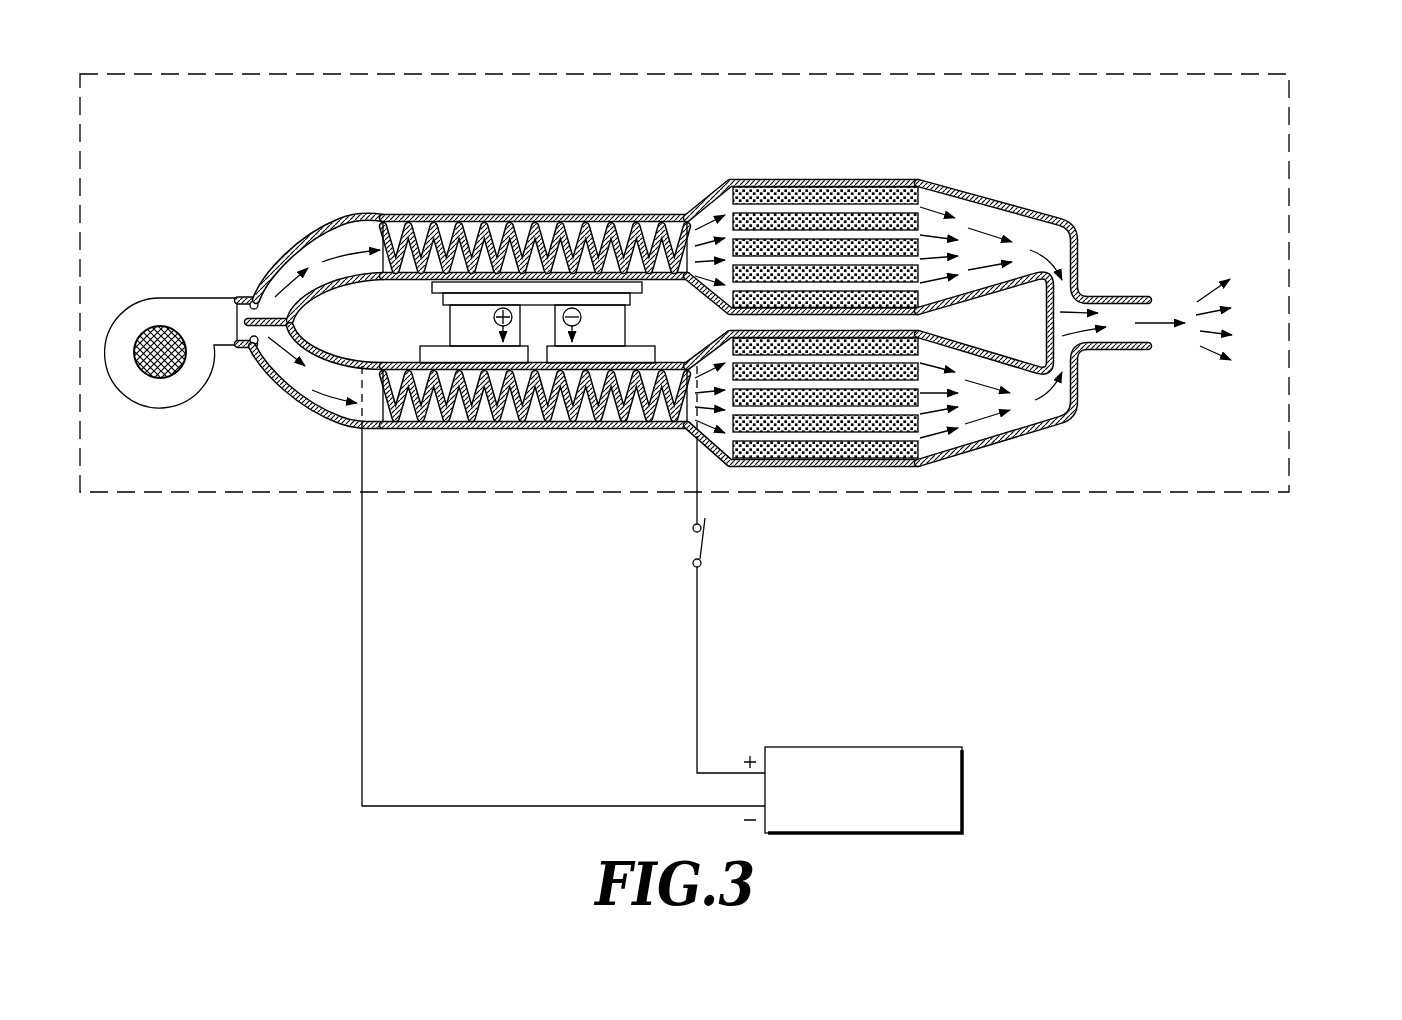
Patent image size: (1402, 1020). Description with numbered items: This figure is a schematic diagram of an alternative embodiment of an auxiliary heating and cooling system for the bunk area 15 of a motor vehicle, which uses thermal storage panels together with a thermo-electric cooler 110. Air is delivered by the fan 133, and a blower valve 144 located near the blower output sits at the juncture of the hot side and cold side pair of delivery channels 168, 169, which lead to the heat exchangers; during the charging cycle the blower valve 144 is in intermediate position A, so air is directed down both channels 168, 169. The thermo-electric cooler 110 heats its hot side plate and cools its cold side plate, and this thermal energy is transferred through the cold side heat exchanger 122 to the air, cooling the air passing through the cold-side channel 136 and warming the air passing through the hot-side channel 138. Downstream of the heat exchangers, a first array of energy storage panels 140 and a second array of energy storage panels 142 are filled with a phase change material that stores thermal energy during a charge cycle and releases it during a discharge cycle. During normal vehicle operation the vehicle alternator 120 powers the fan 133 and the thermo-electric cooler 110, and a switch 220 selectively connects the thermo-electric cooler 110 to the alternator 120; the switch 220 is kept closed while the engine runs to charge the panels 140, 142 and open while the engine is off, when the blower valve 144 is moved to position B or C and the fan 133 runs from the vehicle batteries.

The bunk area 15 is at (1294, 135).
The fan 133 is at (135, 395).
The blower valve 144 is at (280, 312).
The cold side delivery channel 169 is at (335, 245).
The hot side delivery channel 168 is at (298, 378).
The cold side heat exchanger 122 is at (455, 215).
The thermo-electric cooler 110 is at (635, 325).
The first array of energy storage panels 140 is at (852, 178).
The second array of energy storage panels 142 is at (870, 468).
The cold-side channel 136 is at (995, 217).
The hot-side channel 138 is at (1022, 420).
The switch 220 is at (700, 540).
The vehicle alternator 120 is at (857, 747).